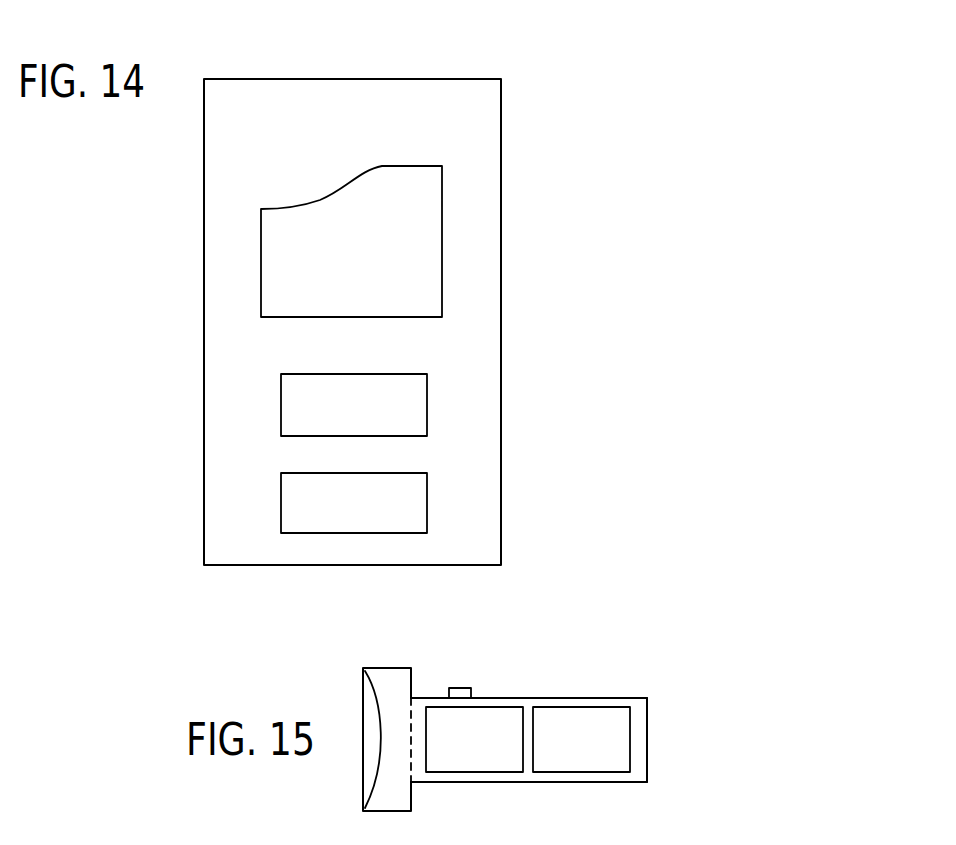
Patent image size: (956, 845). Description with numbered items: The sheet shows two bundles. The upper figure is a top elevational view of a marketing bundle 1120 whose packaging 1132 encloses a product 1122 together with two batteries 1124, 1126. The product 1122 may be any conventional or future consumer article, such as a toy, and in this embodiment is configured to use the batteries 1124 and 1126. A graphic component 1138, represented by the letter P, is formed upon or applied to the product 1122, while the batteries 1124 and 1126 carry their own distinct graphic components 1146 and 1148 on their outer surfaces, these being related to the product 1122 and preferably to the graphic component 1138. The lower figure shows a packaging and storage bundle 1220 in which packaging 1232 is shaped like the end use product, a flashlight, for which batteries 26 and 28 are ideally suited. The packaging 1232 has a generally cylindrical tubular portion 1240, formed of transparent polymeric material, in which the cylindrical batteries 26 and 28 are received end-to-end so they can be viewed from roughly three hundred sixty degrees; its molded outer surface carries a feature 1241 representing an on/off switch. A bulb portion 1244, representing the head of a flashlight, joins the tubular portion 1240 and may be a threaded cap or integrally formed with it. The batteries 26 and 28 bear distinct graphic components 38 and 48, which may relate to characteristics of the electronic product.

In FIG. 14, the marketing bundle 1120 is at (513, 66).
In FIG. 14, the packaging 1132 is at (204, 173).
In FIG. 14, the product 1122 is at (442, 190).
In FIG. 14, the graphic component 1138 is at (362, 244).
In FIG. 14, the battery 1124 is at (427, 403).
In FIG. 14, the graphic component 1146 is at (345, 404).
In FIG. 14, the battery 1126 is at (427, 500).
In FIG. 14, the graphic component 1148 is at (364, 497).
In FIG. 15, the bundle 1220 is at (617, 677).
In FIG. 15, the bulb portion 1244 is at (388, 668).
In FIG. 15, the feature 1241 is at (456, 687).
In FIG. 15, the packaging 1232 is at (505, 697).
In FIG. 15, the battery 26 is at (467, 760).
In FIG. 15, the graphic component 38 is at (477, 740).
In FIG. 15, the battery 28 is at (568, 760).
In FIG. 15, the graphic component 48 is at (586, 741).
In FIG. 15, the tubular portion 1240 is at (630, 782).